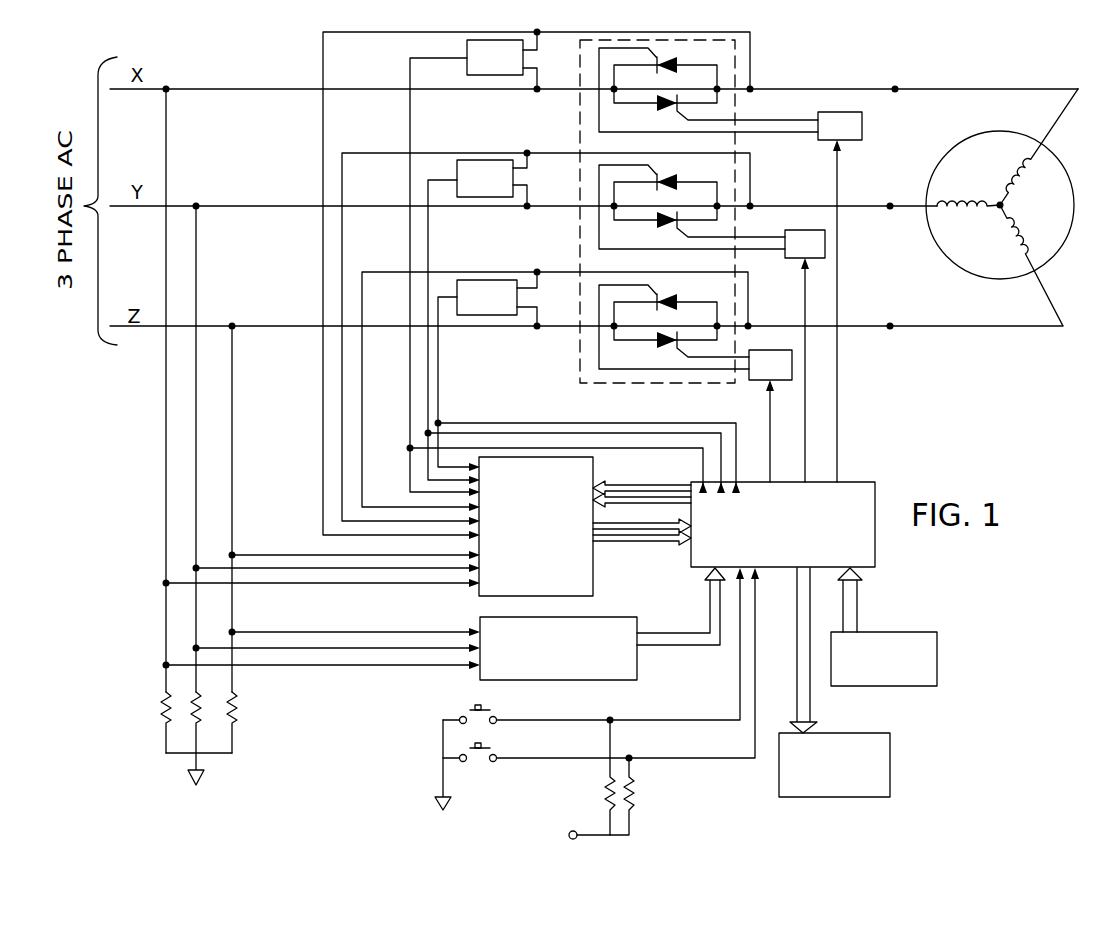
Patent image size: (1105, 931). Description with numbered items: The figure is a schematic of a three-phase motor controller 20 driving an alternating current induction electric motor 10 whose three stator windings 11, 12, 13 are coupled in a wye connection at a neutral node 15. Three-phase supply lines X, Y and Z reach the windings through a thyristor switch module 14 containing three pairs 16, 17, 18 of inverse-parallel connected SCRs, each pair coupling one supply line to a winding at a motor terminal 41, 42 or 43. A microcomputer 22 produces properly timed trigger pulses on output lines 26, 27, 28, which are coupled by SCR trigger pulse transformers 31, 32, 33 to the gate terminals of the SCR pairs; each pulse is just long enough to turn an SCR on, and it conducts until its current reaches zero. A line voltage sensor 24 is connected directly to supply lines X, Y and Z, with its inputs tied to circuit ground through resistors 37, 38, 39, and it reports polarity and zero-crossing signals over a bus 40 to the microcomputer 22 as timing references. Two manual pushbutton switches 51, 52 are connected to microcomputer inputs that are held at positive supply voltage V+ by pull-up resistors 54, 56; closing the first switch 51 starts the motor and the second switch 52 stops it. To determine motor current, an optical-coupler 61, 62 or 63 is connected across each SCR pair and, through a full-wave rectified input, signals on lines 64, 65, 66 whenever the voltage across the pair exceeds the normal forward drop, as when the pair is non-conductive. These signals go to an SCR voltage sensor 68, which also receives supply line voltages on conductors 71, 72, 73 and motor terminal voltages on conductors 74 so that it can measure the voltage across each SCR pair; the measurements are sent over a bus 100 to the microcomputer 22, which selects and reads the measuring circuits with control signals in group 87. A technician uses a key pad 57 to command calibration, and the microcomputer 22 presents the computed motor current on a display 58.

The alternating current induction electric motor 10 is at (987, 260).
The stator winding 11 is at (1021, 172).
The stator winding 12 is at (969, 201).
The stator winding 13 is at (1022, 236).
The thyristor switch module 14 is at (573, 347).
The neutral node 15 is at (996, 210).
The first pair of SCR's 16 is at (630, 83).
The second pair of SCR's 17 is at (630, 200).
The third pair of SCR's 18 is at (630, 320).
The motor controller 20 is at (364, 709).
The microcomputer 22 is at (771, 552).
The line voltage sensor 24 is at (480, 622).
The output line 26 is at (838, 364).
The trigger output line 27 is at (806, 364).
The trigger output line 28 is at (770, 413).
The pulse transformer 31 is at (846, 112).
The pulse transformer 32 is at (790, 230).
The pulse transformer 33 is at (762, 350).
The resistor 37 is at (163, 703).
The resistor 38 is at (199, 708).
The resistor 39 is at (235, 716).
The bus 40 is at (685, 633).
The motor terminal 41 is at (895, 87).
The motor terminal 42 is at (890, 204).
The motor terminal 43 is at (890, 324).
The manual pushbutton switch 51 is at (480, 708).
The manual pushbutton switch 52 is at (478, 762).
The pull-up resistor 54 is at (607, 792).
The pull-up resistor 56 is at (632, 792).
The key pad 57 is at (937, 646).
The display 58 is at (890, 741).
The optical-coupler 61 is at (467, 52).
The optical-coupler 62 is at (483, 160).
The optical-coupler 63 is at (487, 280).
The line 64 is at (410, 352).
The line 65 is at (428, 366).
The line 66 is at (438, 403).
The SCR voltage sensor 68 is at (524, 579).
The conductor 71 is at (323, 531).
The SCR voltage sense line 72 is at (342, 484).
The SCR voltage sense line 73 is at (362, 451).
The conductor 74 is at (350, 587).
The group 87 is at (662, 484).
The bus 100 is at (662, 541).